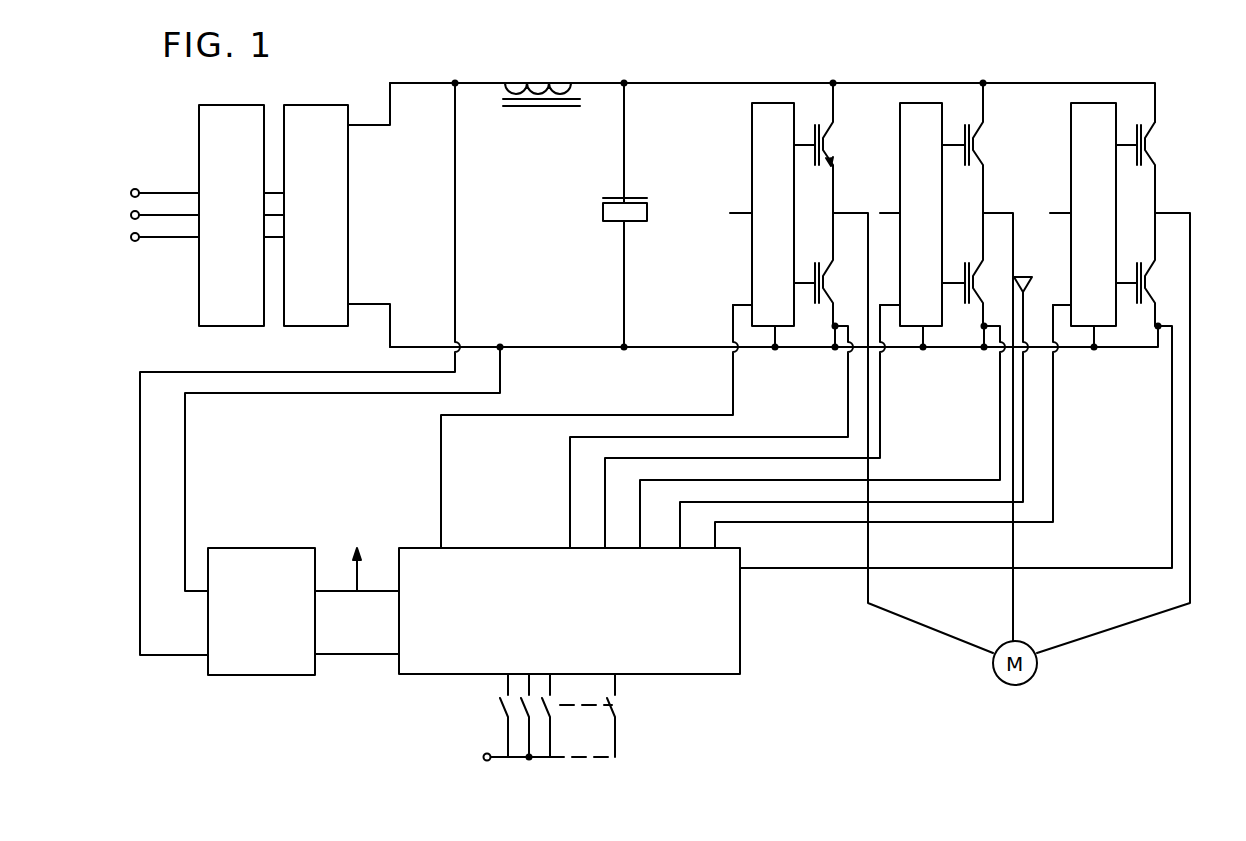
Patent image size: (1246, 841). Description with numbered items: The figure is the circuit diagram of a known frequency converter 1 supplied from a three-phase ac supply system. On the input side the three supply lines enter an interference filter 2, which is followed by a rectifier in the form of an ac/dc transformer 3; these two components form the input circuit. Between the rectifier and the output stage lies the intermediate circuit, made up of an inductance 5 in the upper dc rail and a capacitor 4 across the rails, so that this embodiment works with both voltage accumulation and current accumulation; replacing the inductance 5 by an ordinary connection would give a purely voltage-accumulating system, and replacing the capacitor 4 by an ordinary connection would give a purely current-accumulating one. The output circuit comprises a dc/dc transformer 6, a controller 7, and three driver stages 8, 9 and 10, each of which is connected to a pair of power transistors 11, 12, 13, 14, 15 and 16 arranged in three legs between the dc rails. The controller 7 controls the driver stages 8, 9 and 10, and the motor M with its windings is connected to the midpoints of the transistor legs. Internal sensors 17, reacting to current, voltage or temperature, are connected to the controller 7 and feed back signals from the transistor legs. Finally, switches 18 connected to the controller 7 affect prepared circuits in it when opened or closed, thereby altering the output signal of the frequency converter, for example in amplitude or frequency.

The inverter apparatus 1 is at (860, 82).
The interference filter 2 is at (207, 150).
The ac/dc transformer 3 is at (325, 122).
The capacitor 4 is at (626, 210).
The inductance 5 is at (551, 86).
The dc/dc transformer 6 is at (282, 653).
The controller 7 is at (683, 660).
The driver stage 8 is at (772, 110).
The driver stage 9 is at (925, 112).
The driver stage 10 is at (1087, 110).
The power transistor 11 is at (830, 160).
The power transistor 12 is at (904, 433).
The power transistor 13 is at (983, 160).
The power transistor 14 is at (976, 264).
The power transistor 15 is at (1155, 160).
The power transistor 16 is at (1160, 297).
The internal sensor 17 is at (1026, 276).
The switch 18 is at (552, 745).